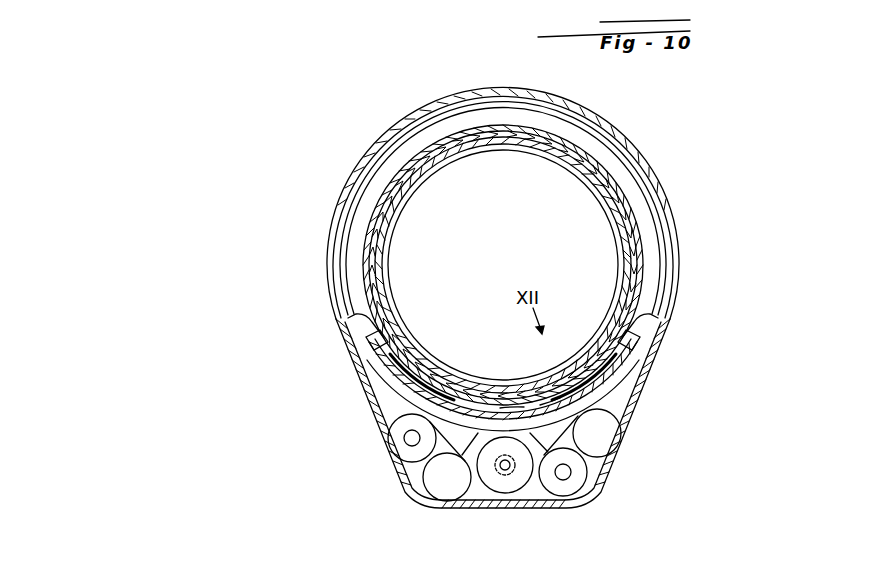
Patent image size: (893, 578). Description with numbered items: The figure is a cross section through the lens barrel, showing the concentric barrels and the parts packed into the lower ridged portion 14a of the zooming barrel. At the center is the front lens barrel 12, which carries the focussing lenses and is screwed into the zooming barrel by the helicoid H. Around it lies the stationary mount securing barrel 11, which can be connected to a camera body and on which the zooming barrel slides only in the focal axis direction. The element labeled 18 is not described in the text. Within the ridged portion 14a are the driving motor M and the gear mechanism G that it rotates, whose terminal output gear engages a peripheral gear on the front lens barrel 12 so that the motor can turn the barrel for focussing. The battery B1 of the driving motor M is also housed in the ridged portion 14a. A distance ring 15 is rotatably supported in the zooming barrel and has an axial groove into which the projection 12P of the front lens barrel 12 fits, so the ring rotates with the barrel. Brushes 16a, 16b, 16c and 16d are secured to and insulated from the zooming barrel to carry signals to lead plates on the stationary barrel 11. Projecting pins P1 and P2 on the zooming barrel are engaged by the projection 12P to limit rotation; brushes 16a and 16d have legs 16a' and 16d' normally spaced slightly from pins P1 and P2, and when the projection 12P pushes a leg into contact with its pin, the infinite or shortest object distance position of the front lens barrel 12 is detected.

The helicoid H is at (478, 125).
The lower ridged portion 14a is at (402, 480).
The front lens barrel 12 is at (565, 138).
The mount securing barrel 11 is at (595, 175).
The inner liner 18 is at (617, 223).
The brush 16a is at (503, 353).
The brush 16b is at (575, 388).
The brush 16c is at (547, 402).
The brush 16d is at (498, 382).
The leg of brush 16a 16a' is at (663, 353).
The leg of brush 16d 16d' is at (340, 354).
The distance ring 15 is at (560, 421).
The projecting pin P1 is at (627, 345).
The projecting pin P2 is at (370, 347).
The battery B1 is at (397, 458).
The projection 12P is at (560, 487).
The driving motor M is at (512, 483).
The gear mechanism G is at (500, 475).